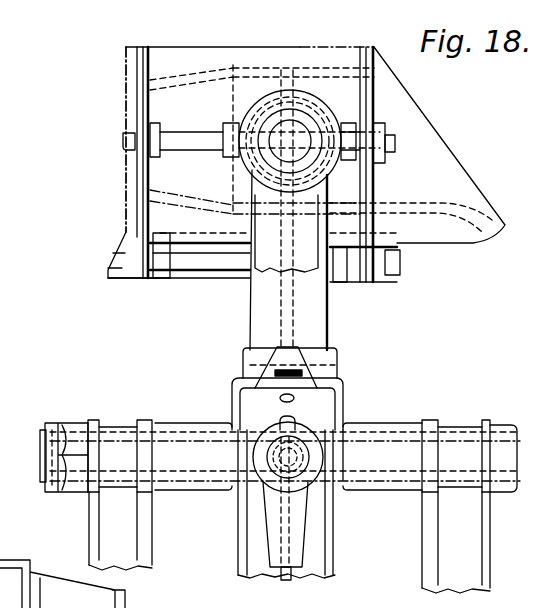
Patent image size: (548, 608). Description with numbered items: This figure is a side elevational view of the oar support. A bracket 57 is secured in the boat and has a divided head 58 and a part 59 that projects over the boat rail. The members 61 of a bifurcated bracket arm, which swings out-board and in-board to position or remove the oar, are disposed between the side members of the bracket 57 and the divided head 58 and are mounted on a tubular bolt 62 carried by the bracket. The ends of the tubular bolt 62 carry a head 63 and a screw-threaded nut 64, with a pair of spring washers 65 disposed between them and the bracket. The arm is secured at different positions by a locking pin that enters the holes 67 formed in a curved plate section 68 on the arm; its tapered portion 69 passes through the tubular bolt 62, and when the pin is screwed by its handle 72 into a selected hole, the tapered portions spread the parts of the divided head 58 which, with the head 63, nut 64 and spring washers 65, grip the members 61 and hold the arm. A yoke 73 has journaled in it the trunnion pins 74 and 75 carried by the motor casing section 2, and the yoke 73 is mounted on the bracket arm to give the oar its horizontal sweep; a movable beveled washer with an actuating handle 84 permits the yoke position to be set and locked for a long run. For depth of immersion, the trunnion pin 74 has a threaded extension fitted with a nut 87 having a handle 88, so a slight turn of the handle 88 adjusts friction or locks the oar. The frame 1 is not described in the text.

The frame 1 is at (453, 165).
The motor casing section 2 is at (284, 47).
The bracket 57 is at (253, 543).
The divided head 58 is at (317, 430).
The part 59 is at (25, 563).
The members 61 is at (172, 448).
The tubular bolt 62 is at (42, 442).
The head 63 is at (503, 490).
The screw-threaded nut 64 is at (71, 484).
The spring washers 65 is at (88, 423).
The holes 67 is at (283, 422).
The curved plate section 68 is at (345, 397).
The tapered portion 69 is at (293, 422).
The handle 72 is at (295, 515).
The yoke 73 is at (260, 293).
The trunnion pin 74 is at (313, 128).
The trunnion pin 75 is at (67, 139).
The actuating handle 84 is at (293, 345).
The nut 87 is at (320, 106).
The handle 88 is at (258, 216).